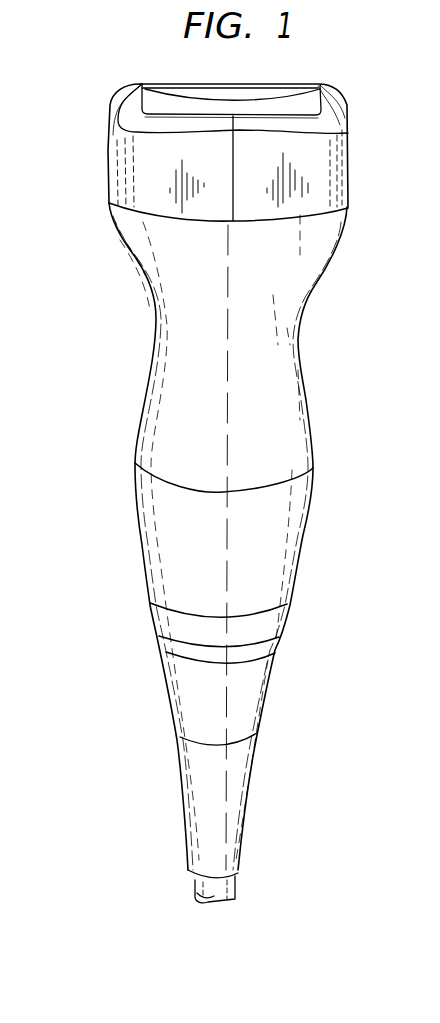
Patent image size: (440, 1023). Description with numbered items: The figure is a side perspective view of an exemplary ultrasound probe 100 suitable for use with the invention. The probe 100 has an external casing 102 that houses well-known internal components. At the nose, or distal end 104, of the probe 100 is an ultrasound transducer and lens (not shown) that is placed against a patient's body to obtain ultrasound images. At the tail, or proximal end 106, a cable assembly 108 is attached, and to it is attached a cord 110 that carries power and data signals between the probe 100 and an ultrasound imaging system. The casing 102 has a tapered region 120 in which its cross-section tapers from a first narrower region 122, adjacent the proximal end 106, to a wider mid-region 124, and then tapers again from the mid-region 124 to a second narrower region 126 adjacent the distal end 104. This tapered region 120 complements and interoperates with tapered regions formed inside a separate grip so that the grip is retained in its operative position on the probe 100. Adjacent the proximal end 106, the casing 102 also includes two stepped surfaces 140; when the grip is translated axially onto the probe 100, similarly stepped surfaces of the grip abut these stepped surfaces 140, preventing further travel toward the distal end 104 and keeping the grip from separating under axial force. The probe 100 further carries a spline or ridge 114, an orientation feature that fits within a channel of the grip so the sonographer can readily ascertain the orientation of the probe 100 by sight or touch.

The probe 100 is at (127, 295).
The external casing 102 is at (158, 362).
The distal end 104 is at (90, 154).
The proximal end 106 is at (131, 658).
The cable assembly 108 is at (249, 812).
The cord 110 is at (237, 888).
The ridge 114 is at (138, 273).
The tapered region 120 is at (313, 619).
The first narrower region 122 is at (278, 491).
The mid-region 124 is at (288, 364).
The second narrower region 126 is at (333, 242).
The stepped surfaces 140 is at (160, 636).